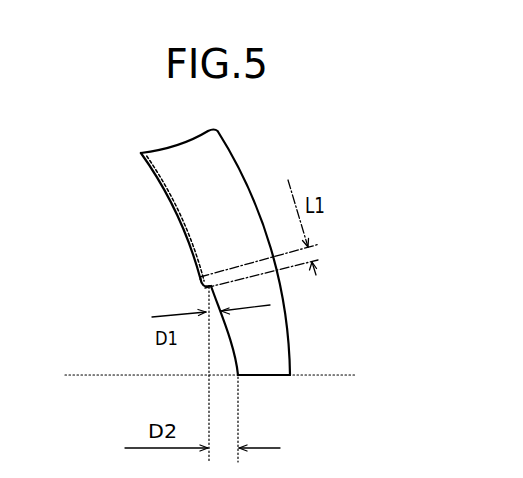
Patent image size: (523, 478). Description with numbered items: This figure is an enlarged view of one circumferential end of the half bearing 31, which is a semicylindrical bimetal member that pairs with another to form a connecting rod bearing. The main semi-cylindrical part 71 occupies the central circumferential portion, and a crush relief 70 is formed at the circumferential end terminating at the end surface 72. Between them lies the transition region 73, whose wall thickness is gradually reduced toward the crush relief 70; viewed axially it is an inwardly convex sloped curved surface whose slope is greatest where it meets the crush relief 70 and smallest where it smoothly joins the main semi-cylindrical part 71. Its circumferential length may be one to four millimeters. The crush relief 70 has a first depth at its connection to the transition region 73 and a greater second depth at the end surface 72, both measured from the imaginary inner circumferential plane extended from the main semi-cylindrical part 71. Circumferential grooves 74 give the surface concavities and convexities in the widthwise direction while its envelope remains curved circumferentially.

The half bearing 31 is at (319, 154).
The crush relief 70 is at (195, 359).
The main semi-cylindrical part 71 is at (157, 180).
The end surface 72 is at (273, 377).
The transition region 73 is at (203, 285).
The circumferential grooves 74 is at (175, 222).